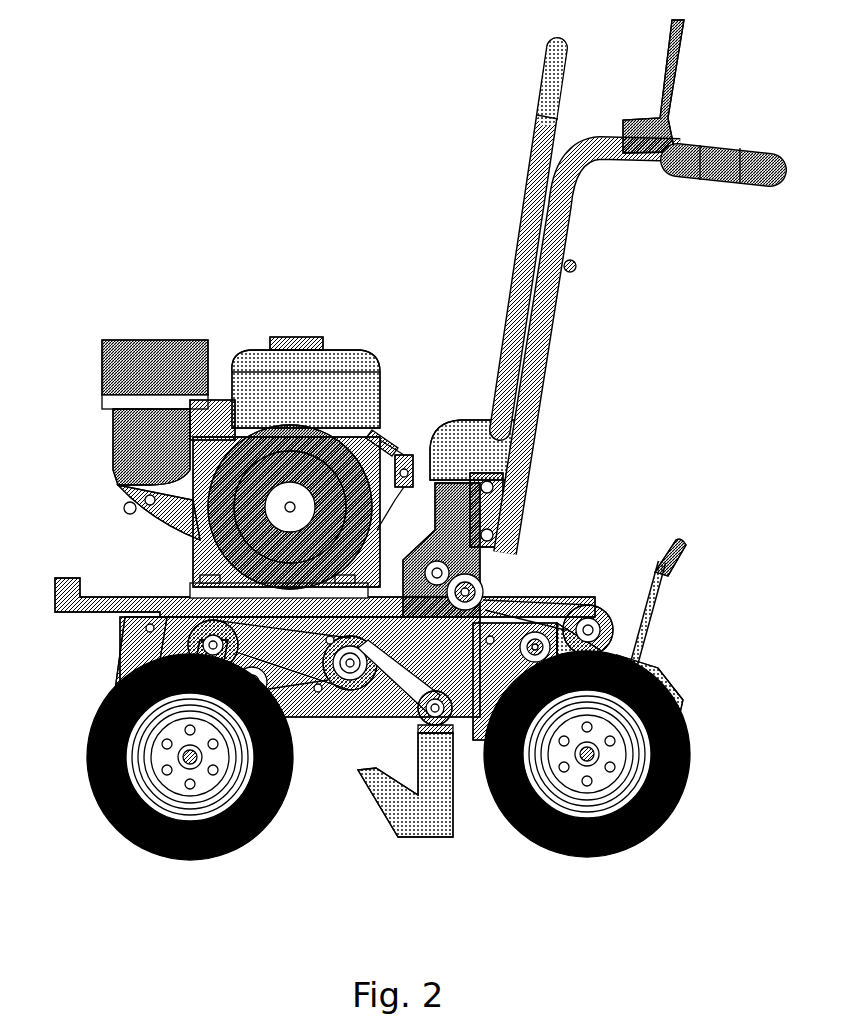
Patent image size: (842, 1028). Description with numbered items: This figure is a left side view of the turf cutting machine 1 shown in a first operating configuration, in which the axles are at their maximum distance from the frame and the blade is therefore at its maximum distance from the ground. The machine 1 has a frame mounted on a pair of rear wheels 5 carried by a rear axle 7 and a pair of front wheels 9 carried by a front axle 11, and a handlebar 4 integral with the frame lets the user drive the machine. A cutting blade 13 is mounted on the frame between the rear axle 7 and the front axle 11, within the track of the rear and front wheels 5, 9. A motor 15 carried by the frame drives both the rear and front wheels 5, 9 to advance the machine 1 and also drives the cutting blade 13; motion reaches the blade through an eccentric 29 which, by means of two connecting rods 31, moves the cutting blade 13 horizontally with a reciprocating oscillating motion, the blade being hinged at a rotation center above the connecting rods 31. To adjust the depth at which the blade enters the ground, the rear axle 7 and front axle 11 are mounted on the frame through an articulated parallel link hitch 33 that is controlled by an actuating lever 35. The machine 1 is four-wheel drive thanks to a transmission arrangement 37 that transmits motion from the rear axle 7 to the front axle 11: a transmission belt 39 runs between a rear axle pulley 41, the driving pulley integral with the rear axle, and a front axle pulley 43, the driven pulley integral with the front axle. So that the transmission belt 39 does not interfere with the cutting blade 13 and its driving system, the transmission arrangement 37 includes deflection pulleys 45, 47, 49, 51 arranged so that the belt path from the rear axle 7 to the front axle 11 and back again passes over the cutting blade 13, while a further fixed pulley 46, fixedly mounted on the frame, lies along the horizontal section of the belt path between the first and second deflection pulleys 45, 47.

The turf cutting machine 1 is at (292, 95).
The handlebar 4 is at (728, 143).
The rear wheels 5 is at (582, 857).
The rear axle 7 is at (643, 763).
The front wheels 9 is at (127, 838).
The front axle 11 is at (158, 758).
The cutting blade 13 is at (380, 810).
The motor 15 is at (253, 352).
The eccentric 29 is at (310, 717).
The connecting rods 31 is at (405, 697).
The articulated parallel link hitch 33 is at (120, 650).
The actuating lever 35 is at (533, 145).
The transmission arrangement 37 is at (585, 583).
The transmission belt 39 is at (377, 530).
The rear axle pulley 41 is at (633, 683).
The front axle pulley 43 is at (190, 795).
The first deflection pulley 45 is at (623, 640).
The fixed pulley 46 is at (505, 597).
The second deflection pulley 47 is at (175, 597).
The deflection pulley 49 is at (208, 583).
The deflection pulley 51 is at (625, 660).